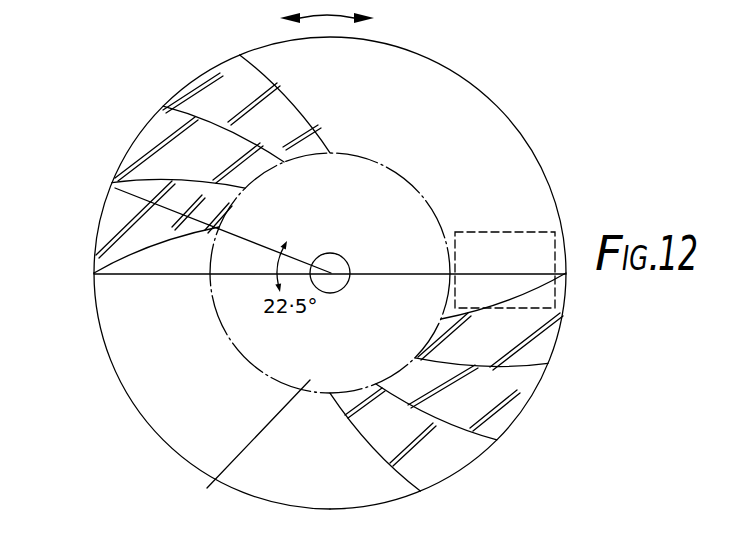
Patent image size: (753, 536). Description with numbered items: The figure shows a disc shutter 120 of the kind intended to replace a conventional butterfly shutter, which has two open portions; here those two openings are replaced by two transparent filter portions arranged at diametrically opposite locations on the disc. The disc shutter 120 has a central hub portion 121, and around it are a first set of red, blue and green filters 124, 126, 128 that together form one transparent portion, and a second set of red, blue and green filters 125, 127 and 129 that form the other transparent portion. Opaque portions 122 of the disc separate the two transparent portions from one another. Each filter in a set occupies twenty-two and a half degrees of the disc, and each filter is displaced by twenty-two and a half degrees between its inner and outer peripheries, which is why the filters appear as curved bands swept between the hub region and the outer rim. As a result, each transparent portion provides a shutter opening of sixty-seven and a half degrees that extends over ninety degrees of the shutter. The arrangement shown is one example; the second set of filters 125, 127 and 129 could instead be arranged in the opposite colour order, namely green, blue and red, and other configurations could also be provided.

The disc shutter 120 is at (457, 88).
The hub portion 121 is at (247, 448).
The opaque portions 122 is at (157, 393).
The red filter 124 is at (110, 213).
The red filter 125 is at (557, 323).
The blue filter 126 is at (155, 128).
The blue filter 127 is at (503, 408).
The green filter 128 is at (213, 73).
The green filter 129 is at (447, 458).